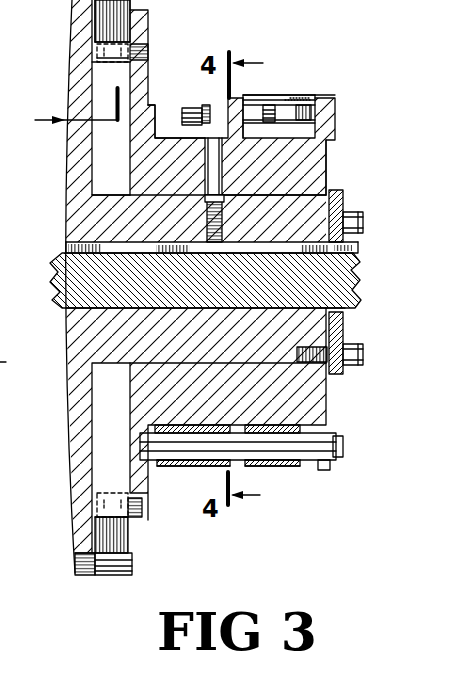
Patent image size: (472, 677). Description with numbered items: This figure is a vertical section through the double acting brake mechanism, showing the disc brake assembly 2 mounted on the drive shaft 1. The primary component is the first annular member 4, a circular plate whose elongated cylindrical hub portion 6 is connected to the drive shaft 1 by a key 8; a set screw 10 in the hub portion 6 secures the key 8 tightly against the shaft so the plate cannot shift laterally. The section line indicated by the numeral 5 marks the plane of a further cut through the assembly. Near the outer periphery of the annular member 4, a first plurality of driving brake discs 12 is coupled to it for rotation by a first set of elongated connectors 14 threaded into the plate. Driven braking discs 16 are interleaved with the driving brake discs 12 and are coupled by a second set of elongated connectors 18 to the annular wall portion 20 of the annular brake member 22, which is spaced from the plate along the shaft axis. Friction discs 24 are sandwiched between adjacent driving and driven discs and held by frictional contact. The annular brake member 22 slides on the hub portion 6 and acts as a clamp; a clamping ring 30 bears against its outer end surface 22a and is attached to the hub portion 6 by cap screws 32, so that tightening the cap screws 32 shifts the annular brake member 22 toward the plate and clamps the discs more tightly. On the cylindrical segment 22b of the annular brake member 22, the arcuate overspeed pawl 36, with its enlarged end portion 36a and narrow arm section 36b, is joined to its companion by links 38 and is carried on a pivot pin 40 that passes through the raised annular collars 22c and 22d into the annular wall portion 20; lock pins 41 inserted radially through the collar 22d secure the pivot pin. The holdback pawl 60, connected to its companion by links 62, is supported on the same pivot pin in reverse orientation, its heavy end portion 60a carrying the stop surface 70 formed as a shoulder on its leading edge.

The drive shaft 1 is at (62, 268).
The disc brake assembly 2 is at (3, 365).
The first annular member 4 is at (70, 157).
The section line 5 is at (66, 112).
The hub portion 6 is at (103, 192).
The key 8 is at (88, 242).
The set screw 10 is at (206, 214).
The driving brake discs 12 is at (133, 560).
The first set of elongated connectors 14 is at (92, 4).
The driven braking discs 16 is at (97, 55).
The second set of elongated connectors 18 is at (112, 58).
The annular wall portion 20 is at (150, 22).
The annular brake member 22 is at (331, 388).
The outer end surface 22a is at (331, 158).
The cylindrical segment 22b is at (166, 137).
The raised annular collar 22c is at (251, 97).
The raised annular collar 22d is at (328, 96).
The friction discs 24 is at (97, 22).
The clamping ring 30 is at (333, 195).
The cap screws 32 is at (356, 218).
The overspeed pawl 36 is at (212, 466).
The enlarged end portion 36a is at (230, 428).
The narrow arm section 36b is at (190, 130).
The links 38 is at (210, 110).
The pivot pin 40 is at (306, 468).
The lock pins 41 is at (322, 466).
The holdback pawl 60 is at (294, 470).
The heavy end portion 60a is at (308, 97).
The links 62 is at (267, 108).
The stop surface 70 is at (299, 115).